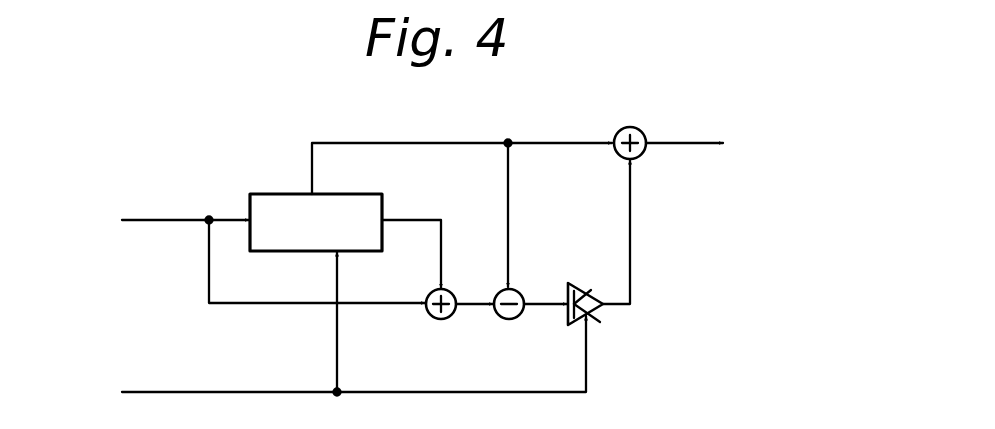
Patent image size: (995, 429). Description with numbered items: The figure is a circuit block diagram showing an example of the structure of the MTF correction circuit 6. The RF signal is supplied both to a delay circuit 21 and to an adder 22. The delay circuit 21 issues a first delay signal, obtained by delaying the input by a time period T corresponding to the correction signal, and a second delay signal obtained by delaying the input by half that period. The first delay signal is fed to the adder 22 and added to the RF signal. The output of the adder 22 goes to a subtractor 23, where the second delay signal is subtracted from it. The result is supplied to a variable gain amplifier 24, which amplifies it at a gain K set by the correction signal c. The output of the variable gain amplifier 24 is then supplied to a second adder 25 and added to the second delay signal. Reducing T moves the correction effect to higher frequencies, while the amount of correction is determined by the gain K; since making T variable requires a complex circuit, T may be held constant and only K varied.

The MTF correction circuit 6 is at (725, 399).
The delay circuit 21 is at (271, 193).
The adder 22 is at (441, 320).
The subtractor 23 is at (511, 320).
The variable gain amplifier 24 is at (600, 322).
The adder 25 is at (643, 130).